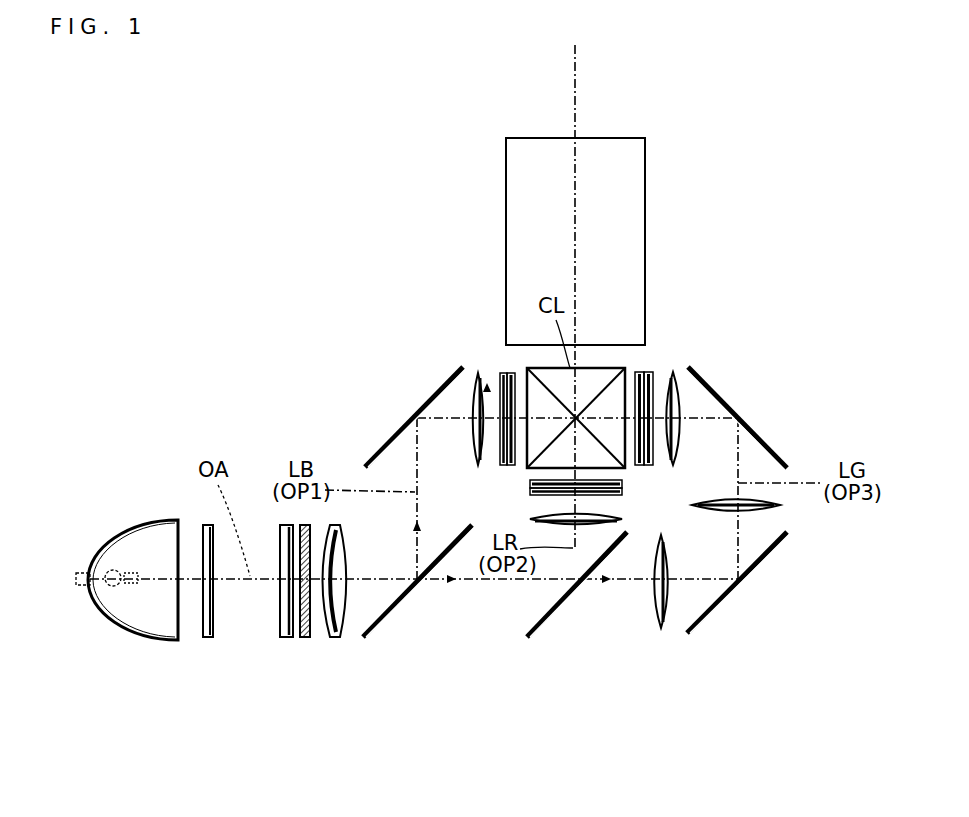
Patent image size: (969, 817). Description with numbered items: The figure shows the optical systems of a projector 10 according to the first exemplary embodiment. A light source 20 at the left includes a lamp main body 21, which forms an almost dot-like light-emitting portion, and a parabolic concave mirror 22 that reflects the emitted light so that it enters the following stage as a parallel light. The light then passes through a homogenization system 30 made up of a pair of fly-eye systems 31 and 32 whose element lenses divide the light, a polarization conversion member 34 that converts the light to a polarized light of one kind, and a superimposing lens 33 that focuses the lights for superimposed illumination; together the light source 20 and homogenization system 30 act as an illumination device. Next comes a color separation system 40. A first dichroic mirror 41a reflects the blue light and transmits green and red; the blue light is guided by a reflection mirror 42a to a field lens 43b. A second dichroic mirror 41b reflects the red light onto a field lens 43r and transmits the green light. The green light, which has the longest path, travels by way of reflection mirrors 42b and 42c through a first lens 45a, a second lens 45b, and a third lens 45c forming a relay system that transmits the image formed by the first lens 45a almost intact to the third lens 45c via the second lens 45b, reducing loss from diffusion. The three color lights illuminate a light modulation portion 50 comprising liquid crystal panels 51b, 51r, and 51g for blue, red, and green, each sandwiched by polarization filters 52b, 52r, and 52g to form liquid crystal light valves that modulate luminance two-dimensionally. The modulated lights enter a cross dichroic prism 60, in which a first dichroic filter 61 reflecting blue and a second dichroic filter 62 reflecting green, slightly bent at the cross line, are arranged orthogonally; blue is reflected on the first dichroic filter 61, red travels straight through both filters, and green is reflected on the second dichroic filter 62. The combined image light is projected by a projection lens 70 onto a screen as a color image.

The projector 10 is at (854, 92).
The light source 20 is at (113, 535).
The lamp main body 21 is at (108, 590).
The parabolic concave mirror 22 is at (148, 639).
The homogenization system 30 is at (308, 713).
The fly-eye system 31 is at (207, 639).
The fly-eye system 32 is at (285, 639).
The superimposing lens 33 is at (340, 639).
The polarization conversion member 34 is at (305, 639).
The color separation system 40 is at (745, 600).
The first dichroic mirror 41a is at (393, 608).
The second dichroic mirror 41b is at (540, 627).
The reflection mirror 42a is at (377, 455).
The reflection mirror 42b is at (763, 560).
The reflection mirror 42c is at (777, 453).
The field lens 43b is at (472, 410).
The field lens 43r is at (530, 519).
The first lens 45a is at (658, 632).
The second lens 45b is at (783, 505).
The third lens 45c is at (680, 437).
The light modulation portion 50 is at (457, 378).
The liquid crystal panel 51b is at (500, 380).
The liquid crystal panel 51g is at (642, 410).
The liquid crystal panel 51r is at (530, 487).
The polarization filter 52b is at (513, 462).
The polarization filter 52g is at (648, 468).
The polarization filter 52r is at (622, 495).
The cross dichroic prism 60 is at (598, 361).
The first dichroic filter 61 is at (623, 369).
The second dichroic filter 62 is at (528, 370).
The projection lens 70 is at (525, 228).